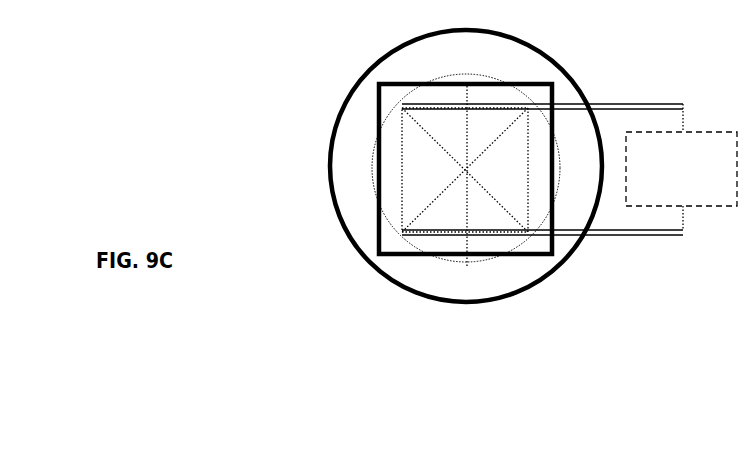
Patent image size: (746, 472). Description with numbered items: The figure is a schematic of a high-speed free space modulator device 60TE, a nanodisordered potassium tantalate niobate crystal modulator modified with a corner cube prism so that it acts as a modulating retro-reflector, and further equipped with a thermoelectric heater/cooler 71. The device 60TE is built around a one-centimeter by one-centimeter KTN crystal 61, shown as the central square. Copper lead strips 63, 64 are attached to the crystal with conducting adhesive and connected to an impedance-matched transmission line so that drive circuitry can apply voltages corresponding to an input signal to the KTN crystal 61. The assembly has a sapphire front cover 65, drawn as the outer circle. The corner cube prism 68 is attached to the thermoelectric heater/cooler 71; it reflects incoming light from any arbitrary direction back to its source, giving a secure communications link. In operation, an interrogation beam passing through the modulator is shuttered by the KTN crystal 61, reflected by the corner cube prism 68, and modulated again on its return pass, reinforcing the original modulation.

The free space modulator device 60TE is at (298, 81).
The KTN crystal 61 is at (408, 181).
The copper lead strip 63 is at (667, 102).
The copper lead strip 64 is at (667, 237).
The sapphire front cover 65 is at (395, 263).
The corner cube prism 68 is at (492, 262).
The thermoelectric heater/cooler 71 is at (450, 85).